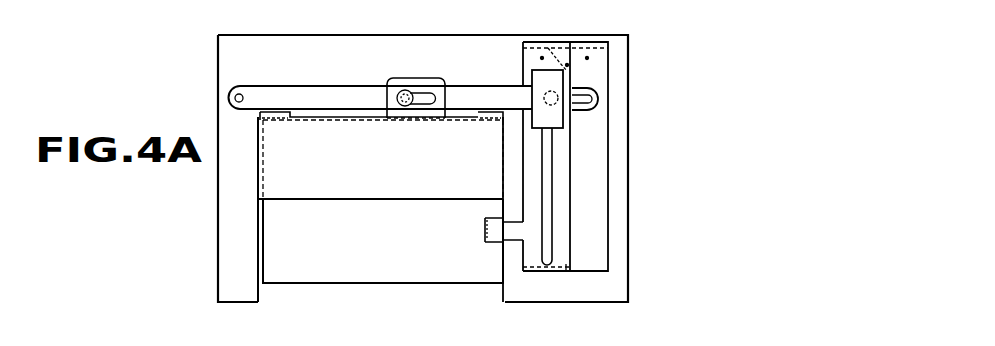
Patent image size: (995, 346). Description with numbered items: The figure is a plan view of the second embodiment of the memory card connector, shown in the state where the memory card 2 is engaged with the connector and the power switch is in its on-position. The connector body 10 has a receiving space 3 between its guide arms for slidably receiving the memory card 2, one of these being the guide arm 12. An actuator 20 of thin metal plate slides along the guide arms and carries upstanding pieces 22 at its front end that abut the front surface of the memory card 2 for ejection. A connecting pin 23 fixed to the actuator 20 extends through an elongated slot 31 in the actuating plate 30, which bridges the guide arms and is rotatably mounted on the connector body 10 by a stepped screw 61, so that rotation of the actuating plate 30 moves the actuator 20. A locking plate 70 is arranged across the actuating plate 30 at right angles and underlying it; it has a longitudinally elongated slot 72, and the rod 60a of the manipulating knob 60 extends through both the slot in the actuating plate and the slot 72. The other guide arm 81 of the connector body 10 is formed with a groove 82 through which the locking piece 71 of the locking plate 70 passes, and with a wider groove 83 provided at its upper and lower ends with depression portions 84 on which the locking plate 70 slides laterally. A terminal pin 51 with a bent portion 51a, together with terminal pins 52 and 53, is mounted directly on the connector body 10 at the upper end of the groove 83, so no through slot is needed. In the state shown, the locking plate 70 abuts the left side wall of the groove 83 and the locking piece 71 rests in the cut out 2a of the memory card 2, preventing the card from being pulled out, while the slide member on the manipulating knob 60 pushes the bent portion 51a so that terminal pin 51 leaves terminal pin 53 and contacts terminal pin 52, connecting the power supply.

The memory card 2 is at (360, 268).
The cut out 2a is at (487, 214).
The receiving space 3 is at (397, 286).
The connector body 10 is at (352, 50).
The guide arm 12 is at (242, 292).
The actuator 20 is at (313, 190).
The upstanding pieces 22 is at (272, 112).
The connecting pin 23 is at (400, 88).
The actuating plate 30 is at (308, 97).
The elongated slot 31 is at (423, 96).
The terminal pin 51 is at (587, 58).
The bent portion 51a is at (572, 67).
The terminal pin 52 is at (542, 58).
The terminal pin 53 is at (567, 65).
The manipulating knob 60 is at (533, 82).
The rod 60a is at (553, 104).
The stepped screw 61 is at (233, 96).
The locking plate 70 is at (567, 270).
The locking piece 71 is at (493, 233).
The elongated slot 72 is at (547, 268).
The guide arm 81 is at (618, 288).
The groove 82 is at (512, 245).
The groove 83 is at (602, 238).
The depression portions 84 is at (610, 53).